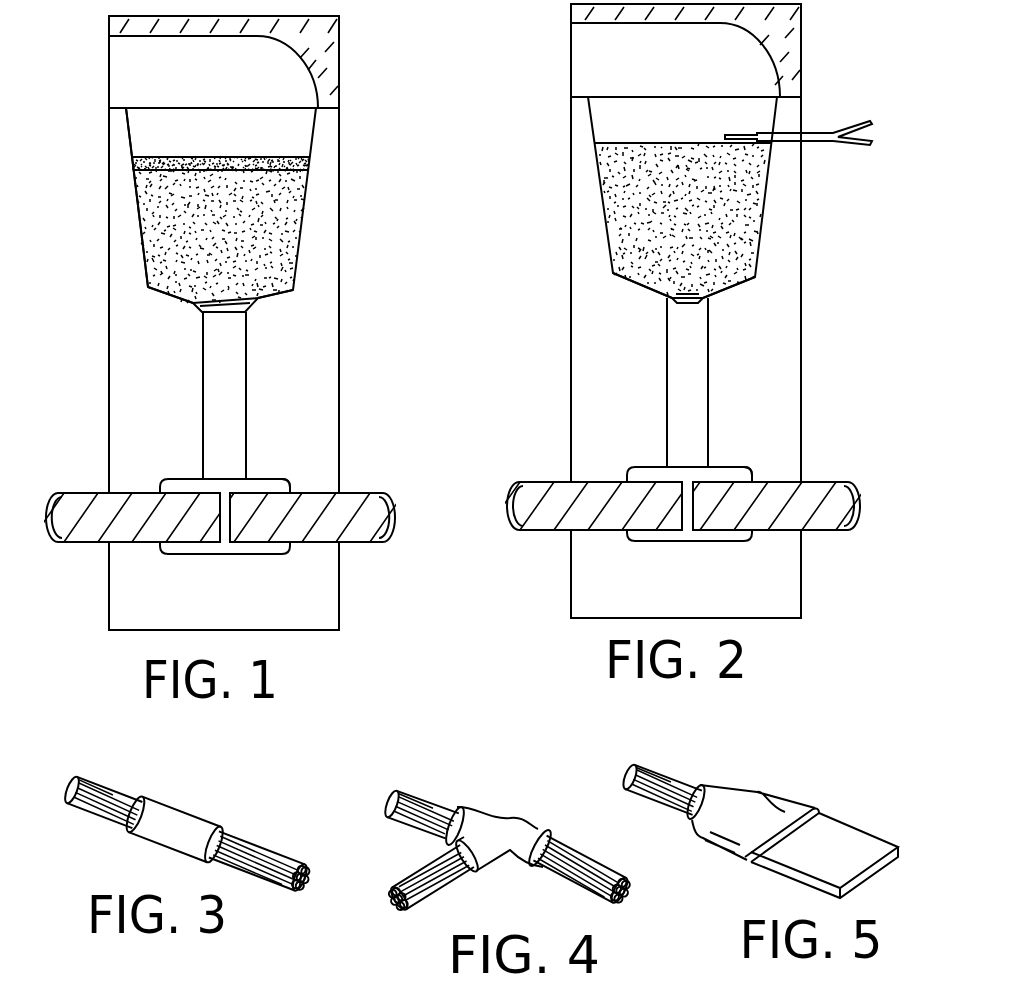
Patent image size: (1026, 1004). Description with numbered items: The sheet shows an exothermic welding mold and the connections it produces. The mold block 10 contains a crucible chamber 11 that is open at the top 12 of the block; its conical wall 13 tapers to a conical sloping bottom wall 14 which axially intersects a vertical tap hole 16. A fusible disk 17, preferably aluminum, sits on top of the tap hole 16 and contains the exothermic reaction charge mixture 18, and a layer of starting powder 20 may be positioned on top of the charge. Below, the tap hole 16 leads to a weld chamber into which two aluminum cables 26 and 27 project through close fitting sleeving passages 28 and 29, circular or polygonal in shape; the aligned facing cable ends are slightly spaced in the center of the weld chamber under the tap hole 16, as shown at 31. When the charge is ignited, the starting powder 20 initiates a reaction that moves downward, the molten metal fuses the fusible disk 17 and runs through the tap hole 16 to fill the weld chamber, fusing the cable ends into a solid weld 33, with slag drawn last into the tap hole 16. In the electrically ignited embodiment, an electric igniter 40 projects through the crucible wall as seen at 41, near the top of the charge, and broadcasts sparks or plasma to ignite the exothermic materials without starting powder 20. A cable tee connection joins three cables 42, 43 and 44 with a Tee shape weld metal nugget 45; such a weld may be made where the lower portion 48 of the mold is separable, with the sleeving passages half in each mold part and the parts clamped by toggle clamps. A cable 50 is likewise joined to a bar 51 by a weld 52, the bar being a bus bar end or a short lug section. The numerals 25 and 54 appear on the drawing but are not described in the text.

In FIG. 1, the mold block 10 is at (342, 268).
In FIG. 2, the mold block 10 is at (806, 318).
In FIG. 1, the crucible chamber 11 is at (310, 198).
In FIG. 1, the top of the block 12 is at (186, 98).
In FIG. 1, the conical wall 13 is at (142, 227).
In FIG. 2, the conical wall 13 is at (602, 202).
In FIG. 1, the conical sloping bottom wall 14 is at (173, 300).
In FIG. 2, the conical sloping bottom wall 14 is at (637, 288).
In FIG. 1, the tap hole 16 is at (247, 397).
In FIG. 2, the tap hole 16 is at (708, 383).
In FIG. 1, the fusible disk 17 is at (228, 312).
In FIG. 2, the fusible disk 17 is at (687, 300).
In FIG. 1, the exothermic reaction charge mixture 18 is at (277, 230).
In FIG. 2, the exothermic reaction charge mixture 18 is at (730, 200).
In FIG. 1, the starting powder 20 is at (183, 157).
In FIG. 1, the weld cavity top 25 is at (265, 478).
In FIG. 2, the weld cavity top 25 is at (722, 467).
In FIG. 1, the cable 26 is at (68, 503).
In FIG. 2, the cable 26 is at (547, 477).
In FIG. 3, the cable 26 is at (108, 790).
In FIG. 1, the cable 27 is at (373, 497).
In FIG. 2, the cable 27 is at (818, 488).
In FIG. 3, the cable 27 is at (277, 852).
In FIG. 1, the sleeving passage 28 is at (140, 493).
In FIG. 2, the sleeving passage 28 is at (598, 482).
In FIG. 1, the sleeving passage 29 is at (315, 487).
In FIG. 2, the sleeving passage 29 is at (780, 530).
In FIG. 1, the spaced cable ends 31 is at (222, 485).
In FIG. 2, the spaced cable ends 31 is at (688, 545).
In FIG. 3, the solid weld 33 is at (192, 797).
In FIG. 2, the electric igniter 40 is at (737, 118).
In FIG. 2, the igniter passage through crucible wall 41 is at (783, 130).
In FIG. 4, the cable 42 is at (423, 792).
In FIG. 4, the cable 43 is at (582, 882).
In FIG. 4, the cable 44 is at (438, 892).
In FIG. 4, the Tee shape weld metal nugget 45 is at (512, 815).
In FIG. 1, the lower portion of the mold 48 is at (345, 607).
In FIG. 2, the lower portion of the mold 48 is at (789, 625).
In FIG. 5, the cable 50 is at (660, 778).
In FIG. 5, the bar 51 is at (823, 843).
In FIG. 5, the weld 52 is at (787, 795).
In FIG. 3, the conductor 54 is at (92, 994).